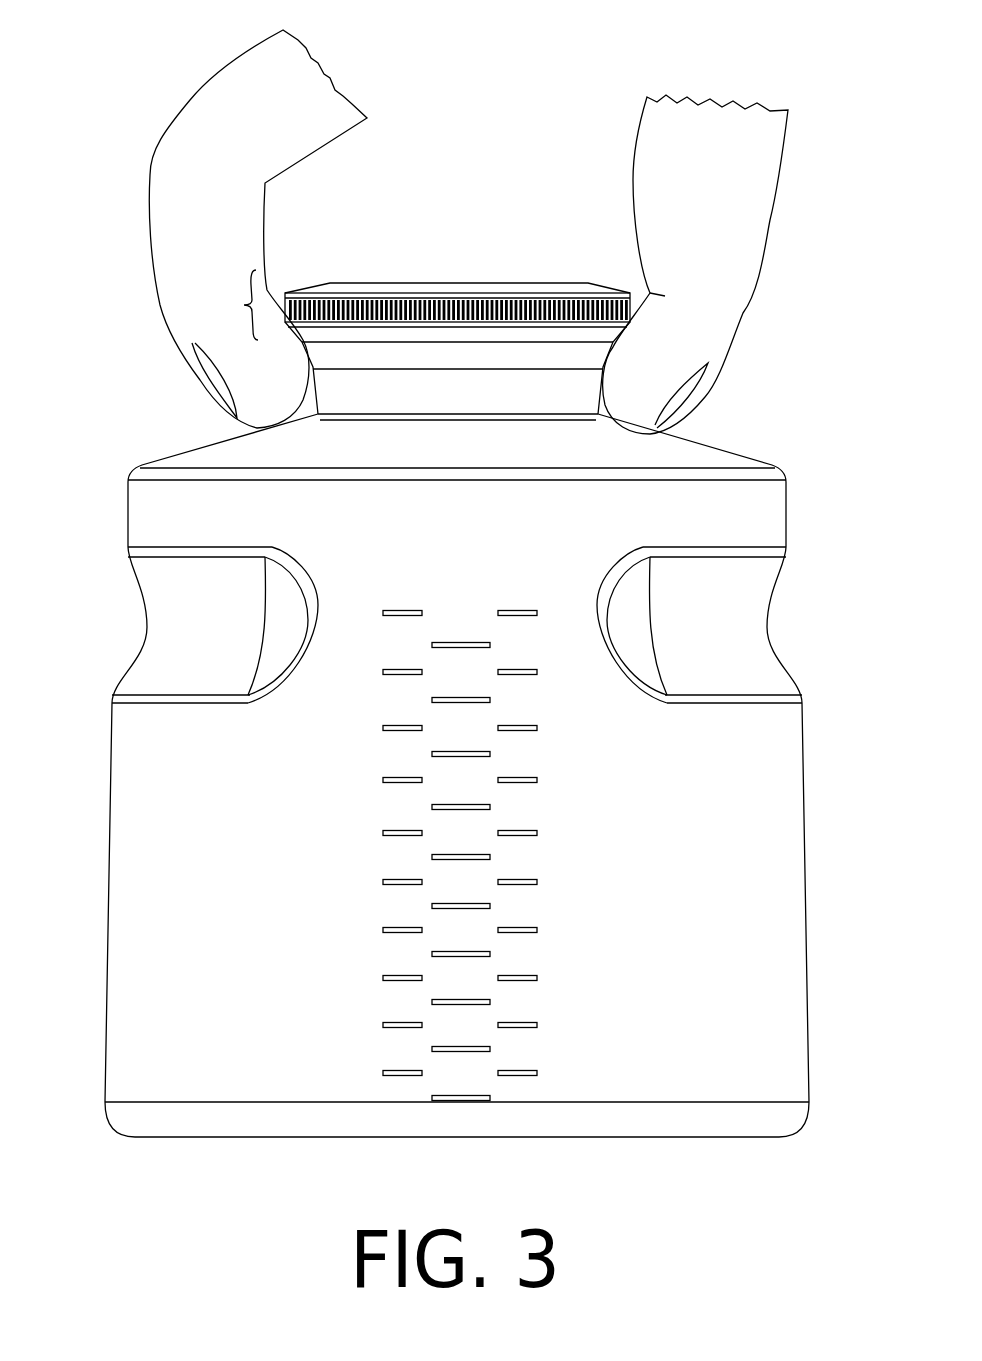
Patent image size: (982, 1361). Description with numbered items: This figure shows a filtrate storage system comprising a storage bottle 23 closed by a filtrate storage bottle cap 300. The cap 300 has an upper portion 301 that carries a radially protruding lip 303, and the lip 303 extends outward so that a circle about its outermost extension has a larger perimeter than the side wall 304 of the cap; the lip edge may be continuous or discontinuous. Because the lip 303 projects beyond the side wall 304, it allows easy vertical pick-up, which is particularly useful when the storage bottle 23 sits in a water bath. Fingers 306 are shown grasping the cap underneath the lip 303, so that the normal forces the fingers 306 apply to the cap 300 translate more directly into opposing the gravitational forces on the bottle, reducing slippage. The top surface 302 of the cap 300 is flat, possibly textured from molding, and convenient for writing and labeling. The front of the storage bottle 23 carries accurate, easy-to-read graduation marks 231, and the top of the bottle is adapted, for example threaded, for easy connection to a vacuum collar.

The storage bottle 23 is at (133, 798).
The graduation marks 231 is at (536, 832).
The filtrate storage bottle cap 300 is at (436, 294).
The upper portion 301 is at (242, 305).
The top surface 302 is at (495, 280).
The radially protruding lip 303 is at (585, 329).
The side wall 304 is at (583, 395).
The fingers 306 is at (770, 221).